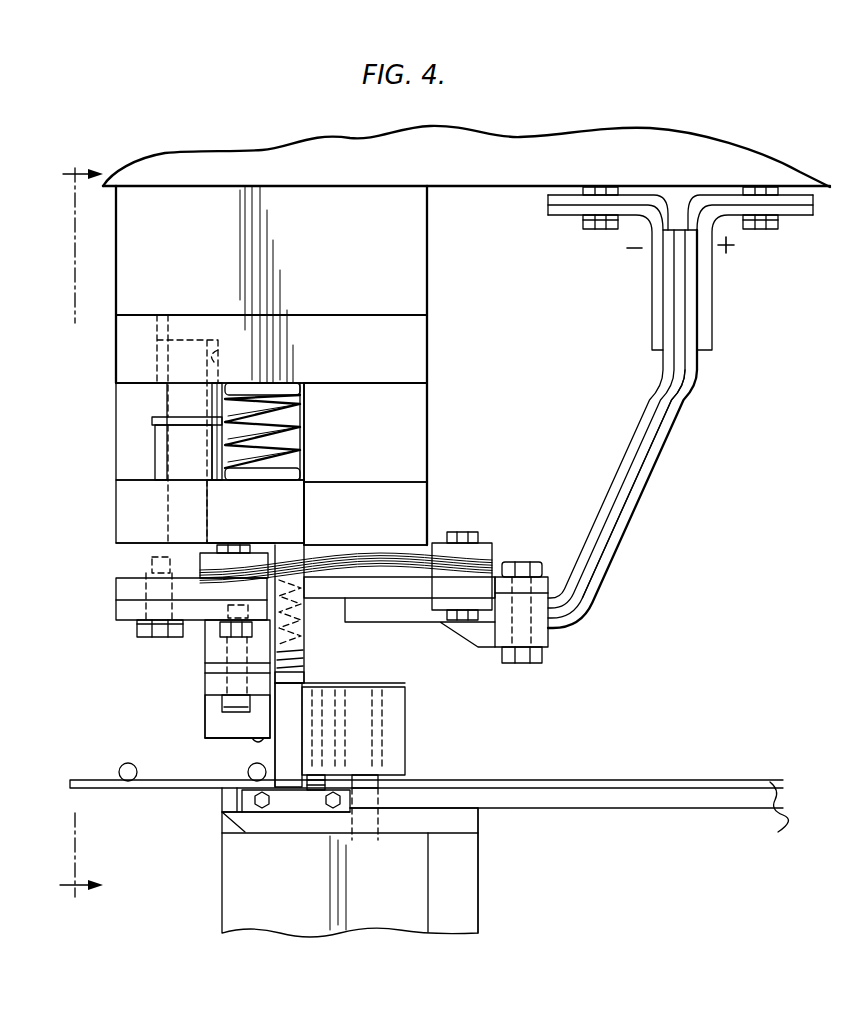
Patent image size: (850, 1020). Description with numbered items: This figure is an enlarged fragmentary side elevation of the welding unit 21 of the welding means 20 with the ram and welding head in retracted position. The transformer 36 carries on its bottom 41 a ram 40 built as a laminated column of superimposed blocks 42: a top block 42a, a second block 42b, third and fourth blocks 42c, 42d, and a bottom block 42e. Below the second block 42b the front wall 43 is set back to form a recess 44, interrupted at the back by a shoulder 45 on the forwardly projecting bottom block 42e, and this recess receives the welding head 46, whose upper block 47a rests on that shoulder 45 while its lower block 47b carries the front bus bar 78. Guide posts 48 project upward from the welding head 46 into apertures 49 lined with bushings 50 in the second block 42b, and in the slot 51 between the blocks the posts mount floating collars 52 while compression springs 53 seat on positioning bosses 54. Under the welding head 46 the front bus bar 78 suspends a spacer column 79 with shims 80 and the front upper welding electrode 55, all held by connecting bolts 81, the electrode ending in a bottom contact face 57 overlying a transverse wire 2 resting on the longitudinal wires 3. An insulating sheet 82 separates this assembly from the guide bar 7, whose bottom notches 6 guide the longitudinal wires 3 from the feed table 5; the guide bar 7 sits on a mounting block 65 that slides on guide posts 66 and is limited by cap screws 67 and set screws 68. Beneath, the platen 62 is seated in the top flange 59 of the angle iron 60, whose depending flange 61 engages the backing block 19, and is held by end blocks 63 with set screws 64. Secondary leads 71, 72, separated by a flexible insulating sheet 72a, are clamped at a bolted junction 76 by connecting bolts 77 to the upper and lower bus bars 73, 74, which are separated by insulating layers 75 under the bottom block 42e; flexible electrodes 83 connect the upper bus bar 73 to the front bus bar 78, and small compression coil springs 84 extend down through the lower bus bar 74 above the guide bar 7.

The transverse wires 2 is at (131, 770).
The longitudinal wires 3 is at (544, 781).
The feed table 5 is at (649, 783).
The notches 6 is at (82, 523).
The guide bar 7 is at (288, 735).
The backing block 19 is at (350, 872).
The welding means 20 is at (434, 291).
The welding unit 21 is at (114, 248).
The transformer 36 is at (466, 156).
The ram 40 is at (434, 357).
The bottom of transformer 41 is at (445, 188).
The blocks 42 is at (434, 440).
The top block 42a is at (271, 284).
The second block 42b is at (271, 349).
The third block 42c is at (365, 432).
The fourth block 42d is at (365, 513).
The bottom block 42e is at (312, 540).
The front wall 43 is at (116, 353).
The recess 44 is at (303, 394).
The shoulder 45 is at (290, 541).
The welding head 46 is at (115, 549).
The upper block 47a is at (255, 511).
The lower block 47b is at (135, 566).
The guide posts 48 is at (196, 431).
The apertures 49 is at (222, 356).
The bushings 50 is at (164, 340).
The slot 51 is at (141, 431).
The collars 52 is at (187, 448).
The compression springs 53 is at (286, 433).
The positioning bosses 54 is at (285, 412).
The front upper welding electrode 55 is at (205, 707).
The bottom contact face 57 is at (209, 745).
The top flange 59 is at (350, 820).
The angle iron 60 is at (484, 861).
The depending flange 61 is at (480, 897).
The platen 62 is at (228, 801).
The end blocks 63 is at (296, 801).
The set screws 64 is at (332, 810).
The mounting block 65 is at (361, 690).
The guide posts 66 is at (386, 749).
The cap screws 67 is at (314, 734).
The set screws 68 is at (326, 746).
The positive secondary lead 71 is at (672, 441).
The negative secondary lead 72 is at (641, 429).
The flexible insulating sheet 72a is at (642, 491).
The upper bus bar 73 is at (499, 566).
The lower bus bar 74 is at (399, 622).
The insulating layers 75 is at (128, 580).
The bolted junction 76 is at (549, 597).
The connecting bolts 77 is at (519, 572).
The front bus bar 78 is at (130, 590).
The spacer column 79 is at (205, 654).
The shims 80 is at (205, 670).
The connecting bolts 81 is at (222, 712).
The insulating sheet 82 is at (286, 677).
The flexible electrodes 83 is at (404, 549).
The compression coil springs 84 is at (308, 663).